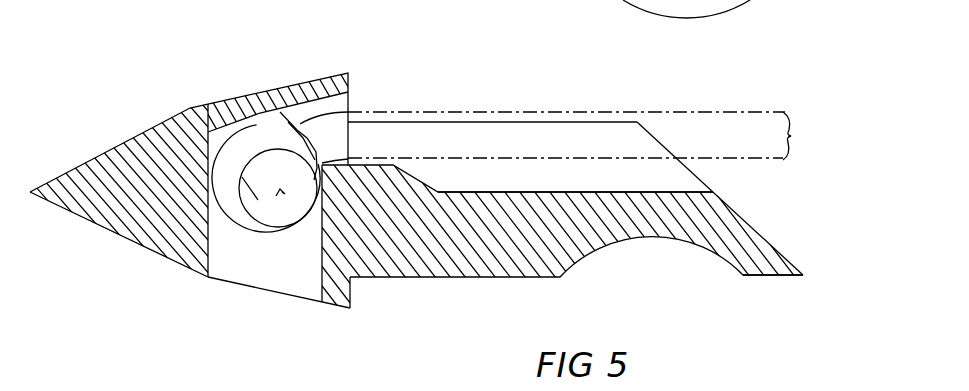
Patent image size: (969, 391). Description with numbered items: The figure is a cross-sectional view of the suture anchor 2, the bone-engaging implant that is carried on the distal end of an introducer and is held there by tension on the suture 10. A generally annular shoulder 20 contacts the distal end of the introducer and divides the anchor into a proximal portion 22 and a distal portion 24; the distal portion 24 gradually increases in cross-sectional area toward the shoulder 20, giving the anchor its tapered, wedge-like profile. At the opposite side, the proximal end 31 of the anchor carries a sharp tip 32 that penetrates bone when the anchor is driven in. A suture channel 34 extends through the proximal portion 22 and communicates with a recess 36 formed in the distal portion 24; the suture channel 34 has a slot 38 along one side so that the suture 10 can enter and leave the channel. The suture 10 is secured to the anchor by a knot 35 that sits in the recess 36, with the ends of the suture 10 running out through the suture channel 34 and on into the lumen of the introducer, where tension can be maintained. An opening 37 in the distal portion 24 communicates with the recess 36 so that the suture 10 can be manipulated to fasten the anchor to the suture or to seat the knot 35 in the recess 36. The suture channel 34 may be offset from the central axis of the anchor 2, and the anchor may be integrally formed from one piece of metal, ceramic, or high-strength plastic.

The suture anchor 2 is at (214, 54).
The suture 10 is at (692, 125).
The shoulder 20 is at (352, 82).
The proximal portion 22 is at (505, 272).
The distal portion 24 is at (187, 273).
The proximal end 31 is at (782, 252).
The sharp tip 32 is at (807, 275).
The suture channel 34 is at (673, 183).
The knot 35 is at (260, 132).
The recess 36 is at (302, 273).
The opening 37 is at (260, 292).
The slot 38 is at (492, 120).